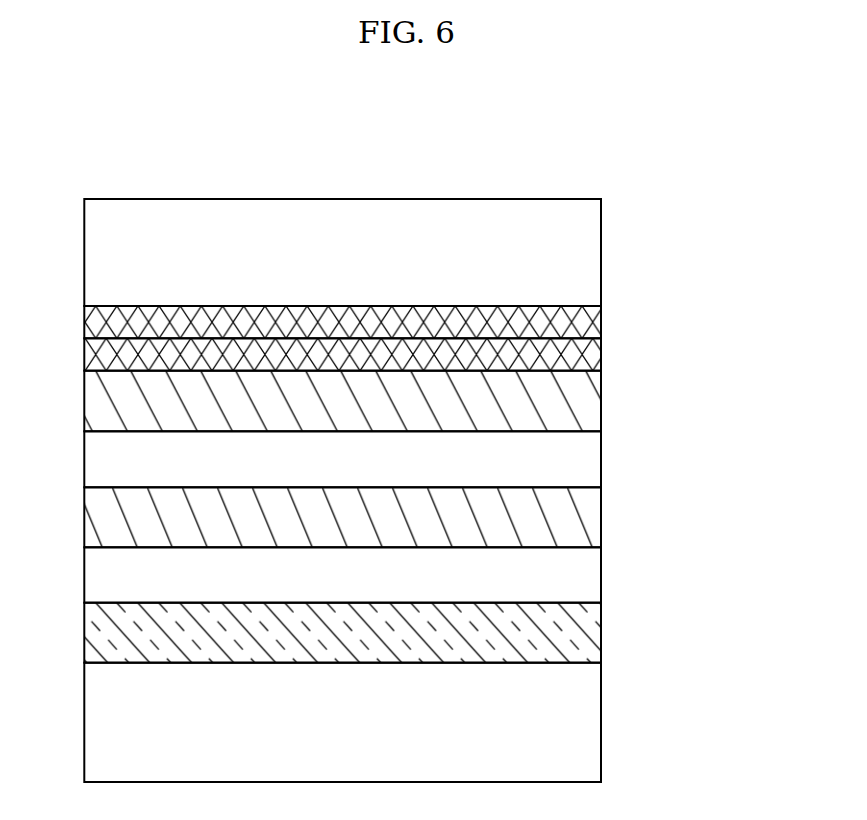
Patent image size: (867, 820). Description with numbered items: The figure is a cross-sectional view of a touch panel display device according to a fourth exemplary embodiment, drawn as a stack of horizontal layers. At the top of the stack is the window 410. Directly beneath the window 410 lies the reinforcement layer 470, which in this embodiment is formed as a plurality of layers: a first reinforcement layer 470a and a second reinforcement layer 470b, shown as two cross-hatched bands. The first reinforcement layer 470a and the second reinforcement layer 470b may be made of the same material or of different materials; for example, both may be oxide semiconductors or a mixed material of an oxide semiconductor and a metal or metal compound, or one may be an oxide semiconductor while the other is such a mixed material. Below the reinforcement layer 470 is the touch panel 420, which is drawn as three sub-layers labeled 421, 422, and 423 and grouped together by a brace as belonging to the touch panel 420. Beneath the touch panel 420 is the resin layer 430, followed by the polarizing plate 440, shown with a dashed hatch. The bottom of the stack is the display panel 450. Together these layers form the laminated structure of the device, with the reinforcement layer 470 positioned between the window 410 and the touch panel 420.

The window 410 is at (597, 255).
The reinforcement layer 470 is at (416, 334).
The first reinforcement layer 470a is at (597, 318).
The second reinforcement layer 470b is at (597, 352).
The touch panel 420 is at (411, 459).
The first layer 421 is at (597, 398).
The second layer 422 is at (597, 462).
The third layer 423 is at (376, 517).
The resin layer 430 is at (597, 579).
The polarizing plate 440 is at (597, 632).
The display panel 450 is at (597, 725).